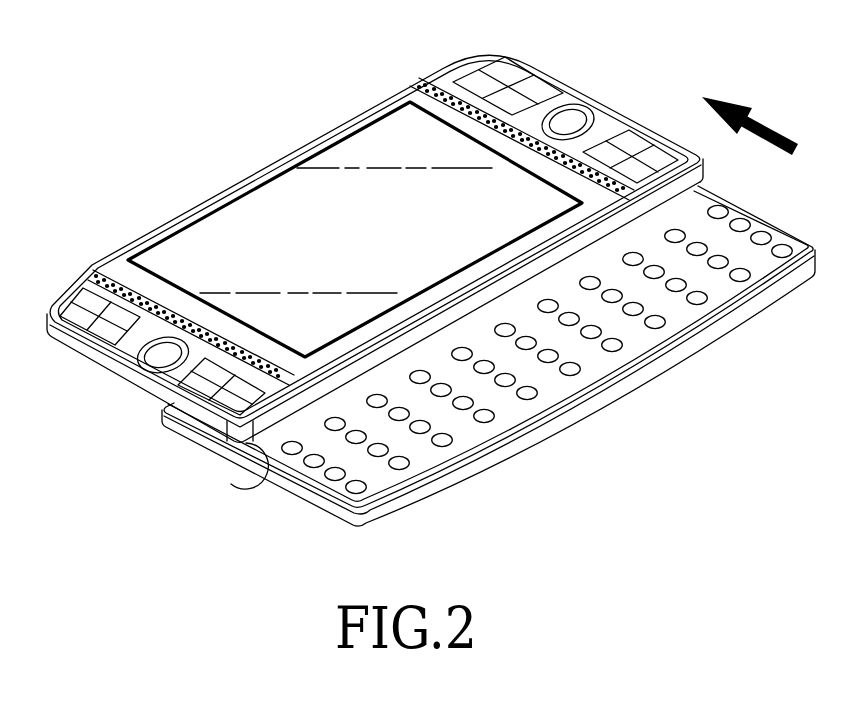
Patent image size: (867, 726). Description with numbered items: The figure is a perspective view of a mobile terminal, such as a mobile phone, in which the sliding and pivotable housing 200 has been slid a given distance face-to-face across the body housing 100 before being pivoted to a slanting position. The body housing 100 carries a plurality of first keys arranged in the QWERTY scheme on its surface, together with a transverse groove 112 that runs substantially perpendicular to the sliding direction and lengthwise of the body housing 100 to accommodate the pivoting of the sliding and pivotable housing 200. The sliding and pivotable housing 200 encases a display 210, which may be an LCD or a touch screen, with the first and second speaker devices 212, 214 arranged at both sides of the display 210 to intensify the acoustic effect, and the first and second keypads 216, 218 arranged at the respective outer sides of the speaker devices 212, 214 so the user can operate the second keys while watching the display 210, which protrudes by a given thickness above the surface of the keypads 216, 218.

The body housing 100 is at (636, 418).
The transverse groove 112 is at (231, 484).
The sliding and pivotable housing 200 is at (263, 143).
The display 210 is at (212, 228).
The first speaker device 212 is at (411, 84).
The second speaker device 214 is at (92, 268).
The first keypad 216 is at (543, 90).
The second keypad 218 is at (147, 365).